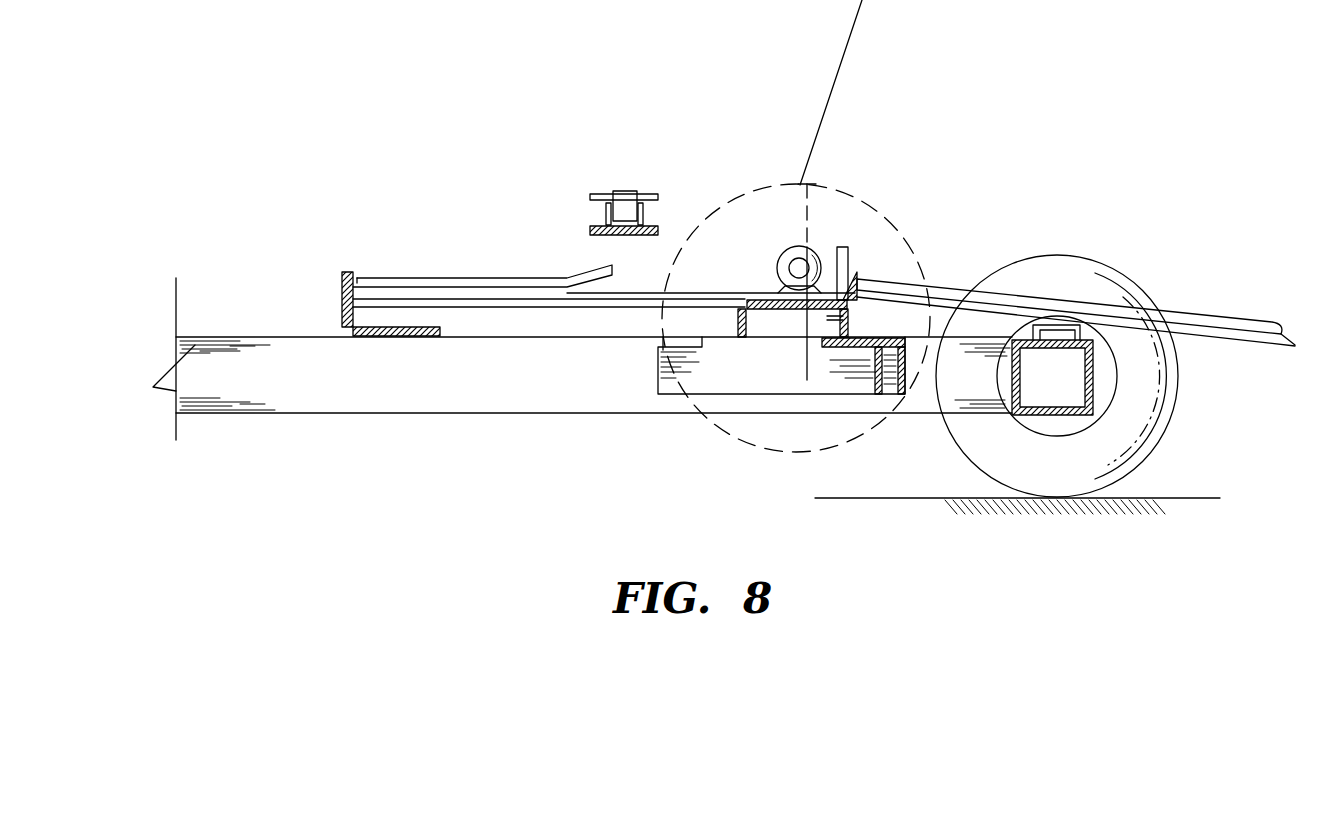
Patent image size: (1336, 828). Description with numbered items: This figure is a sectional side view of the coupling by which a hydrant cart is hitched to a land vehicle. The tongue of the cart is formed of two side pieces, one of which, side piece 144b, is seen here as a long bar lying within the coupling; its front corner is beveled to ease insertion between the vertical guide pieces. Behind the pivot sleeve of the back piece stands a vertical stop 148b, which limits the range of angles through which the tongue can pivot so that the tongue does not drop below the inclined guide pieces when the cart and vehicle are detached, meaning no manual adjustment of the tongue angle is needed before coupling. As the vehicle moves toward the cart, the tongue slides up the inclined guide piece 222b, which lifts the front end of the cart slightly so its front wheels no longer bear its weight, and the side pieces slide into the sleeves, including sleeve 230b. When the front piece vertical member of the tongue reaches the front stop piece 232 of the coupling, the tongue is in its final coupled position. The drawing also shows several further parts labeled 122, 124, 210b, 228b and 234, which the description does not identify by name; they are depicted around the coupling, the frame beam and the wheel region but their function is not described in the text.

The clamp base 122 is at (590, 230).
The clamp body 124 is at (625, 190).
The side piece 144b is at (635, 293).
The vertical stop 148b is at (849, 250).
The wheel 210b is at (1128, 278).
The inclined guide piece 222b is at (1174, 313).
The rail 228b is at (550, 308).
The sleeve 230b is at (462, 278).
The front stop piece 232 is at (342, 297).
The frame beam 234 is at (413, 337).